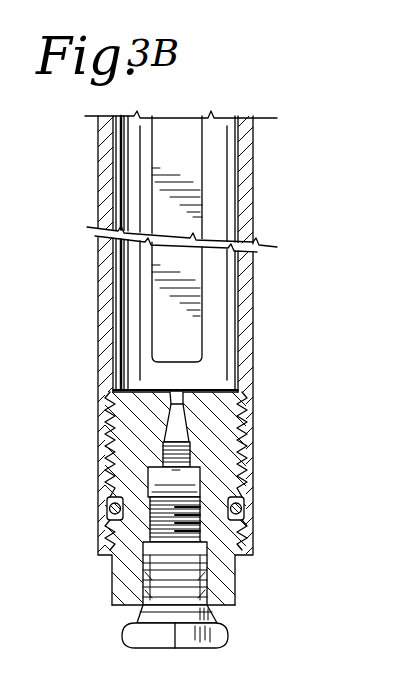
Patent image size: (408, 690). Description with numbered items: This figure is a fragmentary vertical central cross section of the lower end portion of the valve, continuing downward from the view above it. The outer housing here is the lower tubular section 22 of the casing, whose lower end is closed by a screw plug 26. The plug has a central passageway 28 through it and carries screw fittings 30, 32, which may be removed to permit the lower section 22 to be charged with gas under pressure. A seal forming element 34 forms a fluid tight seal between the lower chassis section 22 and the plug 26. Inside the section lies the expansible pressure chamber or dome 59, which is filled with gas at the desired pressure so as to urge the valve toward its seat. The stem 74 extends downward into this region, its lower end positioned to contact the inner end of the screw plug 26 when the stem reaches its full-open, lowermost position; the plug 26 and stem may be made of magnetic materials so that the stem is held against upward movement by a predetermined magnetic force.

The lower tubular section 22 is at (247, 309).
The pressure chamber or dome 59 is at (223, 209).
The stem 74 is at (183, 152).
The screw plug 26 is at (235, 461).
The central passageway 28 is at (176, 420).
The screw fitting 32 is at (190, 460).
The screw fitting 30 is at (190, 527).
The seal forming element 34 is at (243, 507).